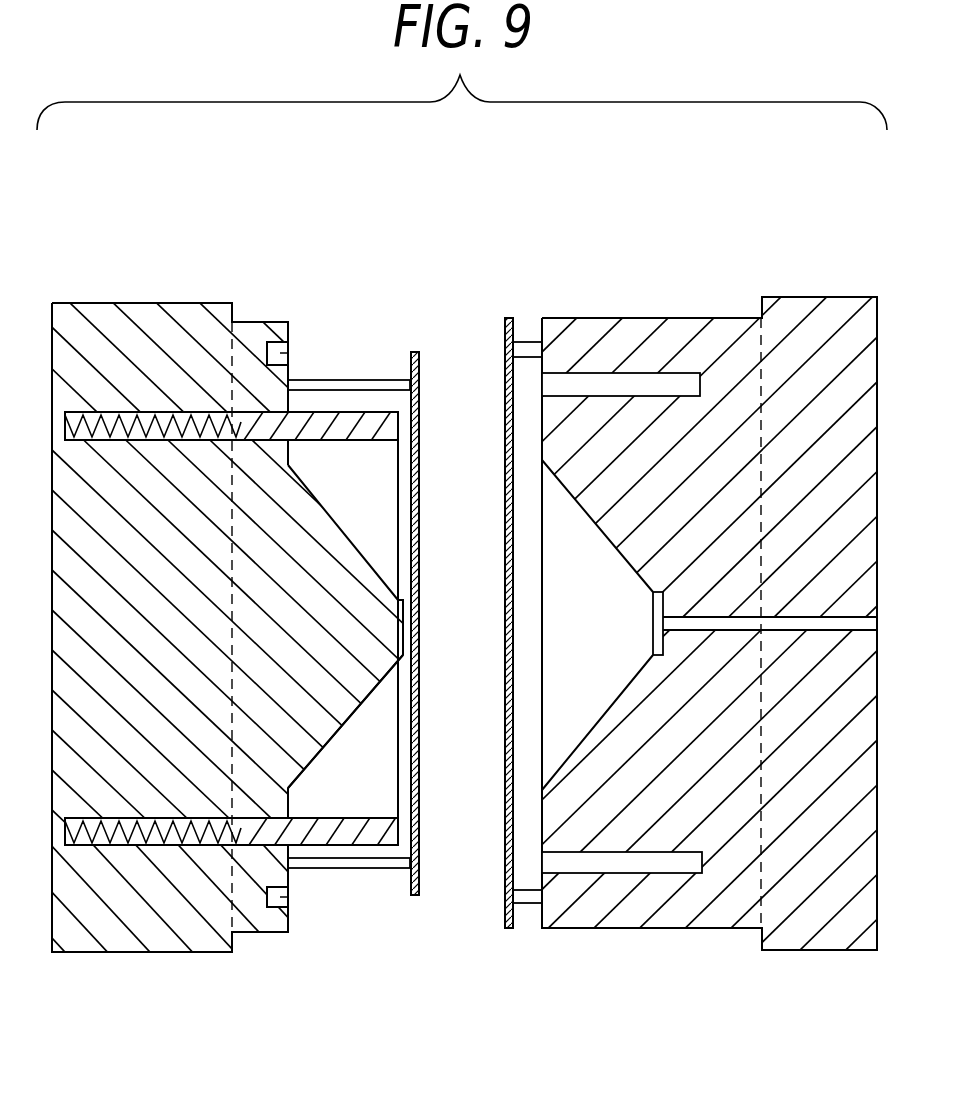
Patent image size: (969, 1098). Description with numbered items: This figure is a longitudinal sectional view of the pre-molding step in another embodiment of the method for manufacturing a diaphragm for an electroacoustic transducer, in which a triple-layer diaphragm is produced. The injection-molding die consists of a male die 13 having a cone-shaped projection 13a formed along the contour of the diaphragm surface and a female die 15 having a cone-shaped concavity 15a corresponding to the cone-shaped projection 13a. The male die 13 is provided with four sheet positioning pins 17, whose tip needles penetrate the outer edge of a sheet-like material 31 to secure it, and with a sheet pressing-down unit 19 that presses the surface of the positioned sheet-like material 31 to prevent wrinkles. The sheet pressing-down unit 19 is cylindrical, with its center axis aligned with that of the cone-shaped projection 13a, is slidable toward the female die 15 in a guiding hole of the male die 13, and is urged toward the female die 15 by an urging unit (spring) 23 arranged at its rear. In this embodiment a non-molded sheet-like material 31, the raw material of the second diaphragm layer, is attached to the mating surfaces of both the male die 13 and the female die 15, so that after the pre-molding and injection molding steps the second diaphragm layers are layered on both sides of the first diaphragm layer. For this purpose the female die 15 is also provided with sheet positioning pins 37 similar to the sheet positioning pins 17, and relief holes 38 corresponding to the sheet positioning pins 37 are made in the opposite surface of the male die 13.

The male die part 13 is at (145, 303).
The cone-shaped projection 13a is at (332, 736).
The female die part 15 is at (838, 297).
The cone-shaped concavity 15a is at (612, 543).
The sheet positioning pins 17 is at (348, 380).
The sheet pressing-down unit 19 is at (368, 412).
The urging unit (spring) 23 is at (122, 832).
The sheet-like material 31 is at (420, 488).
The sheet positioning pins 37 is at (526, 342).
The relief holes 38 is at (288, 353).